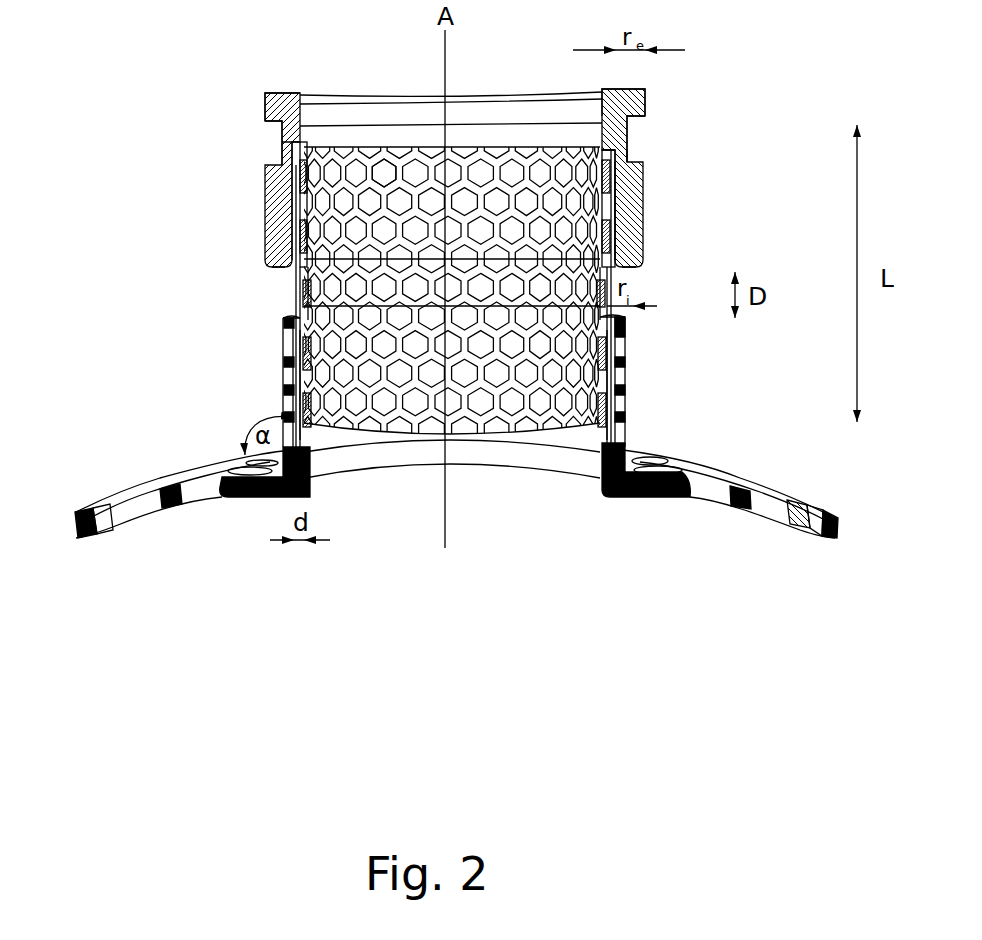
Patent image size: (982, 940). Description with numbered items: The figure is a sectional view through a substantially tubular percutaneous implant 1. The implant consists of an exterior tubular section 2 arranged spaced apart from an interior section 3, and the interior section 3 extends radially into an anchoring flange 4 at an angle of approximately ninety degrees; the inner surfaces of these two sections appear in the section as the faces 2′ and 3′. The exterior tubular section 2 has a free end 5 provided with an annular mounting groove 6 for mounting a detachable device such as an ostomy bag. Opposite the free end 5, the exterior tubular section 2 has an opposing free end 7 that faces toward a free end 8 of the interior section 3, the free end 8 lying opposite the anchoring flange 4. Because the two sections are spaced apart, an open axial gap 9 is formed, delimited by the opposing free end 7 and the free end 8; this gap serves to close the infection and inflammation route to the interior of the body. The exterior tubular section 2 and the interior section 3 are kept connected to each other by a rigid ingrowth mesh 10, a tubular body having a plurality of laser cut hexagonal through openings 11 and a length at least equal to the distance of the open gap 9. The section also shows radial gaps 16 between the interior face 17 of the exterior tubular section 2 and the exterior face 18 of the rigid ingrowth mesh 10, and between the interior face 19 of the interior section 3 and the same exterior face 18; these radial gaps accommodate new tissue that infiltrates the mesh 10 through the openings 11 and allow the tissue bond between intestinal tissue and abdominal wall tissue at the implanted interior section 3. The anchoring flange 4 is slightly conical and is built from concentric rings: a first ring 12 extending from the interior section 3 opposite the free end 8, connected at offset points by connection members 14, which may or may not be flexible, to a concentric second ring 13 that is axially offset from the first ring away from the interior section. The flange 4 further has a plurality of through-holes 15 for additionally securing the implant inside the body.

The tubular implant 1 is at (190, 222).
The exterior tubular section 2 is at (638, 197).
The inner surface of upper ring 2′ is at (645, 236).
The interior section 3 is at (620, 378).
The inner surface of lower ring 3′ is at (620, 420).
The anchoring flange 4 is at (722, 465).
The free end 5 is at (637, 91).
The annular mounting groove 6 is at (628, 139).
The opposing free end 7 is at (633, 268).
The free end 8 is at (621, 320).
The open gap 9 is at (288, 298).
The rigid ingrowth mesh 10 is at (430, 170).
The hexagonal through openings 11 is at (380, 178).
The first ring 12 is at (641, 496).
The second ring 13 is at (827, 537).
The connection members 14 is at (735, 508).
The through-holes 15 is at (665, 464).
The radial gaps 16 is at (300, 200).
The interior face 17 is at (282, 165).
The exterior face 18 is at (298, 292).
The interior face 19 is at (285, 340).